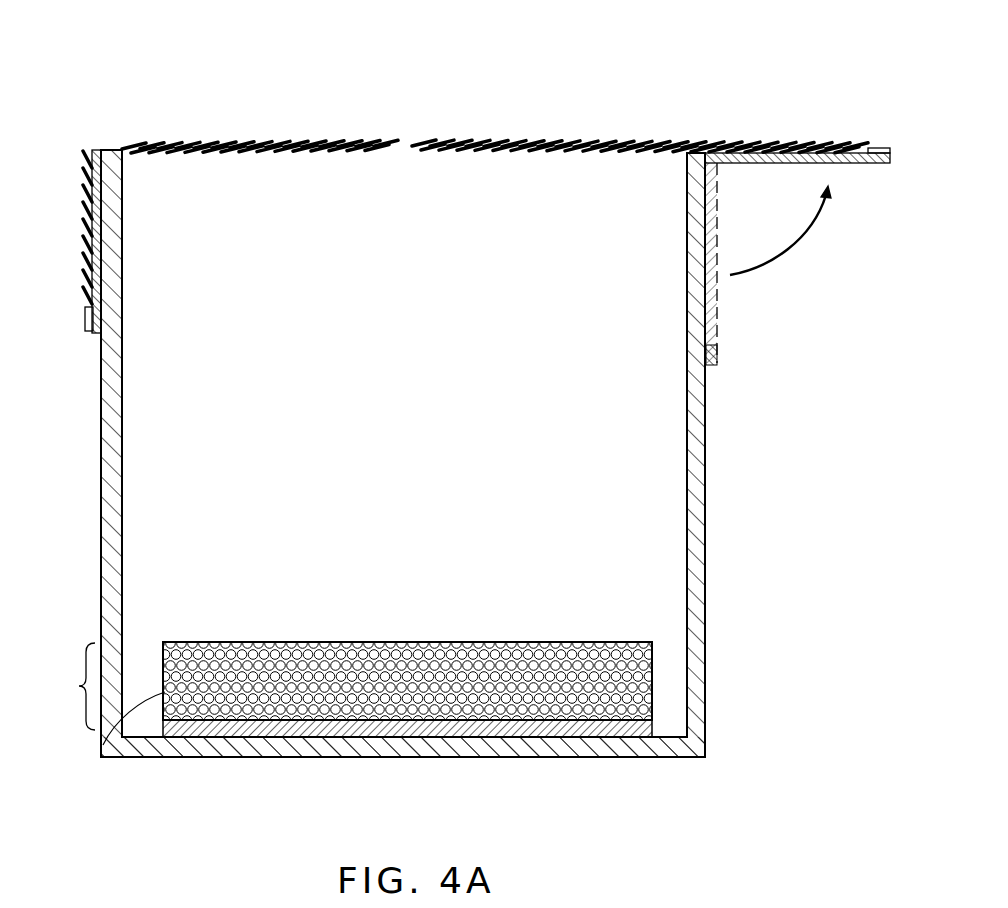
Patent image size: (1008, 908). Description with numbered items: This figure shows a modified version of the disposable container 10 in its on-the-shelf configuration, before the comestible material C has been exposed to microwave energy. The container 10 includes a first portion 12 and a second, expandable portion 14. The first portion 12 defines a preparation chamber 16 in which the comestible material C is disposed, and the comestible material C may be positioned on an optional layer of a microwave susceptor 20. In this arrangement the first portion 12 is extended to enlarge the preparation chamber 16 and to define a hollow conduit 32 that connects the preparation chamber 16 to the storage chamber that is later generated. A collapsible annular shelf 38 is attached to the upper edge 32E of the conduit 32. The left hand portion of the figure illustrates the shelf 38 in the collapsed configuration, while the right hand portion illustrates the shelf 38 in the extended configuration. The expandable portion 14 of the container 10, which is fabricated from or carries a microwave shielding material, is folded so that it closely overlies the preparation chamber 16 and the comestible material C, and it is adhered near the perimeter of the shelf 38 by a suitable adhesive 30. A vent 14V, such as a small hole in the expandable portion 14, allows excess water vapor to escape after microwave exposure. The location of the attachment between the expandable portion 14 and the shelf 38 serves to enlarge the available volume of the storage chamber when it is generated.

The container 10 is at (196, 50).
The first portion 12 is at (71, 686).
The expandable portion 14 is at (318, 140).
The vent 14V is at (408, 136).
The preparation chamber 16 is at (665, 690).
The microwave susceptor 20 is at (442, 756).
The adhesive 30 is at (873, 148).
The hollow conduit 32 is at (585, 466).
The upper edge of the conduit 32E is at (112, 150).
The collapsible annular shelf 38 is at (825, 165).
The comestible material C is at (103, 745).